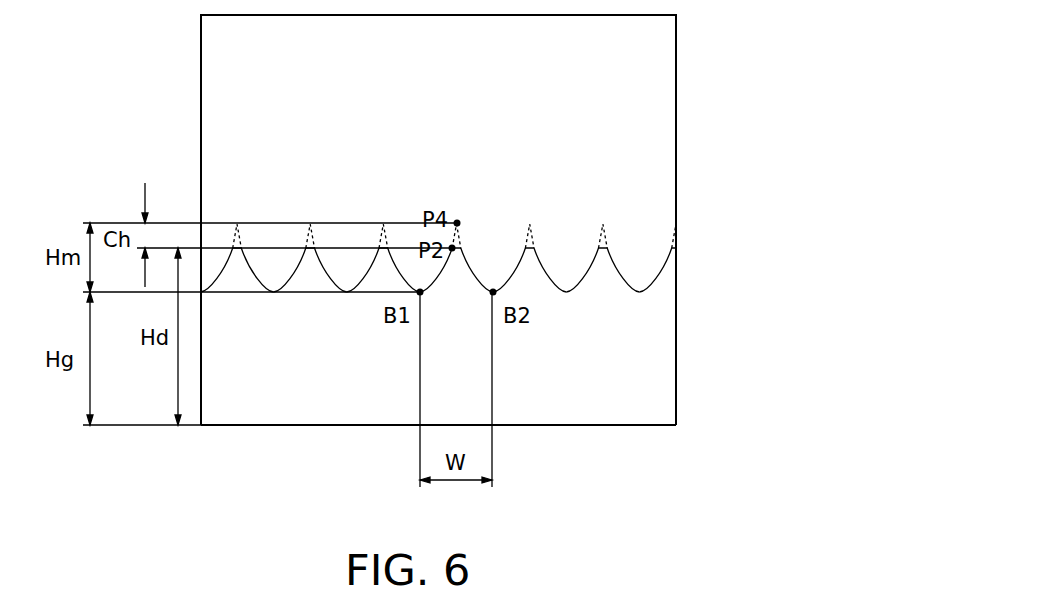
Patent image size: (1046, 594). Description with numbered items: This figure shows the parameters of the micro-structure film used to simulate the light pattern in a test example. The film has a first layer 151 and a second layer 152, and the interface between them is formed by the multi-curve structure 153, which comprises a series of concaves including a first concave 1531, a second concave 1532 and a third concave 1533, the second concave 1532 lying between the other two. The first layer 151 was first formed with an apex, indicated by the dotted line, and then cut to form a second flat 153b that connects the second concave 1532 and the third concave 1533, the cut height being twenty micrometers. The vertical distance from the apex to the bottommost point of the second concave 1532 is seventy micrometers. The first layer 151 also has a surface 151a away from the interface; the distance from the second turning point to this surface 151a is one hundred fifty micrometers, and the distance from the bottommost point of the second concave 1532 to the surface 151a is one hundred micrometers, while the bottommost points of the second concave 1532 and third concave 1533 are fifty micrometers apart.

The first layer 151 is at (668, 368).
The surface 151a is at (642, 425).
The second layer 152 is at (676, 125).
The multi-curve structure 153 is at (476, 213).
The first concave 1531 is at (323, 277).
The second concave 1532 is at (400, 274).
The third concave 1533 is at (487, 213).
The second flat 153b is at (456, 246).